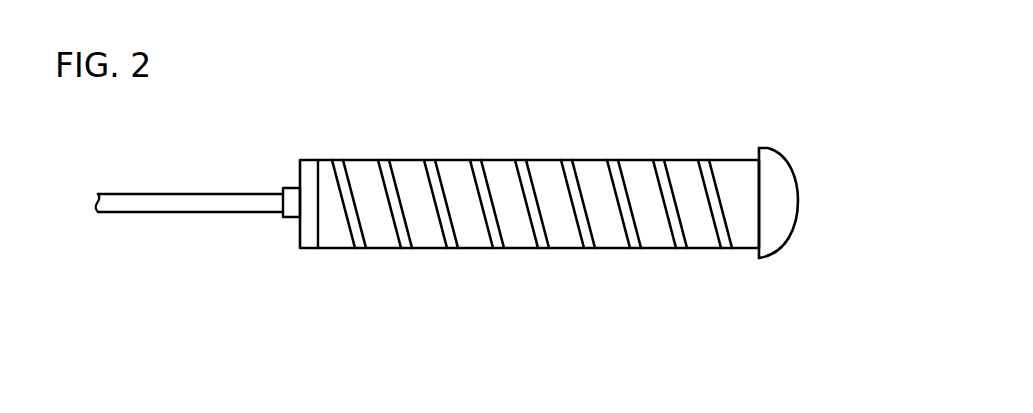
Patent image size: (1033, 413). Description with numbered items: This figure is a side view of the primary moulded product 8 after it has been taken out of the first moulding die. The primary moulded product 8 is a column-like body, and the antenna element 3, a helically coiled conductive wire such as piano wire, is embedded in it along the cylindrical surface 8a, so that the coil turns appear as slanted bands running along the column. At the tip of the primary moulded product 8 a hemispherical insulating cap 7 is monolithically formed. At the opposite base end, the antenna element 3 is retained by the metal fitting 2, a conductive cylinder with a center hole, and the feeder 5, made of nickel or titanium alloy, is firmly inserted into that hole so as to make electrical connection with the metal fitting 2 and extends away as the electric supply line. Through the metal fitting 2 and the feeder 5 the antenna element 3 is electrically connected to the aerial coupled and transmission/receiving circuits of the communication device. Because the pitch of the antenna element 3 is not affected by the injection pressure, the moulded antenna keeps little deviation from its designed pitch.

The metal fitting 2 is at (291, 202).
The antenna element 3 is at (572, 185).
The feeder 5 is at (204, 203).
The hemispherical insulating cap 7 is at (773, 218).
The primary moulded product 8 is at (520, 182).
The cylindrical surface 8a is at (449, 158).